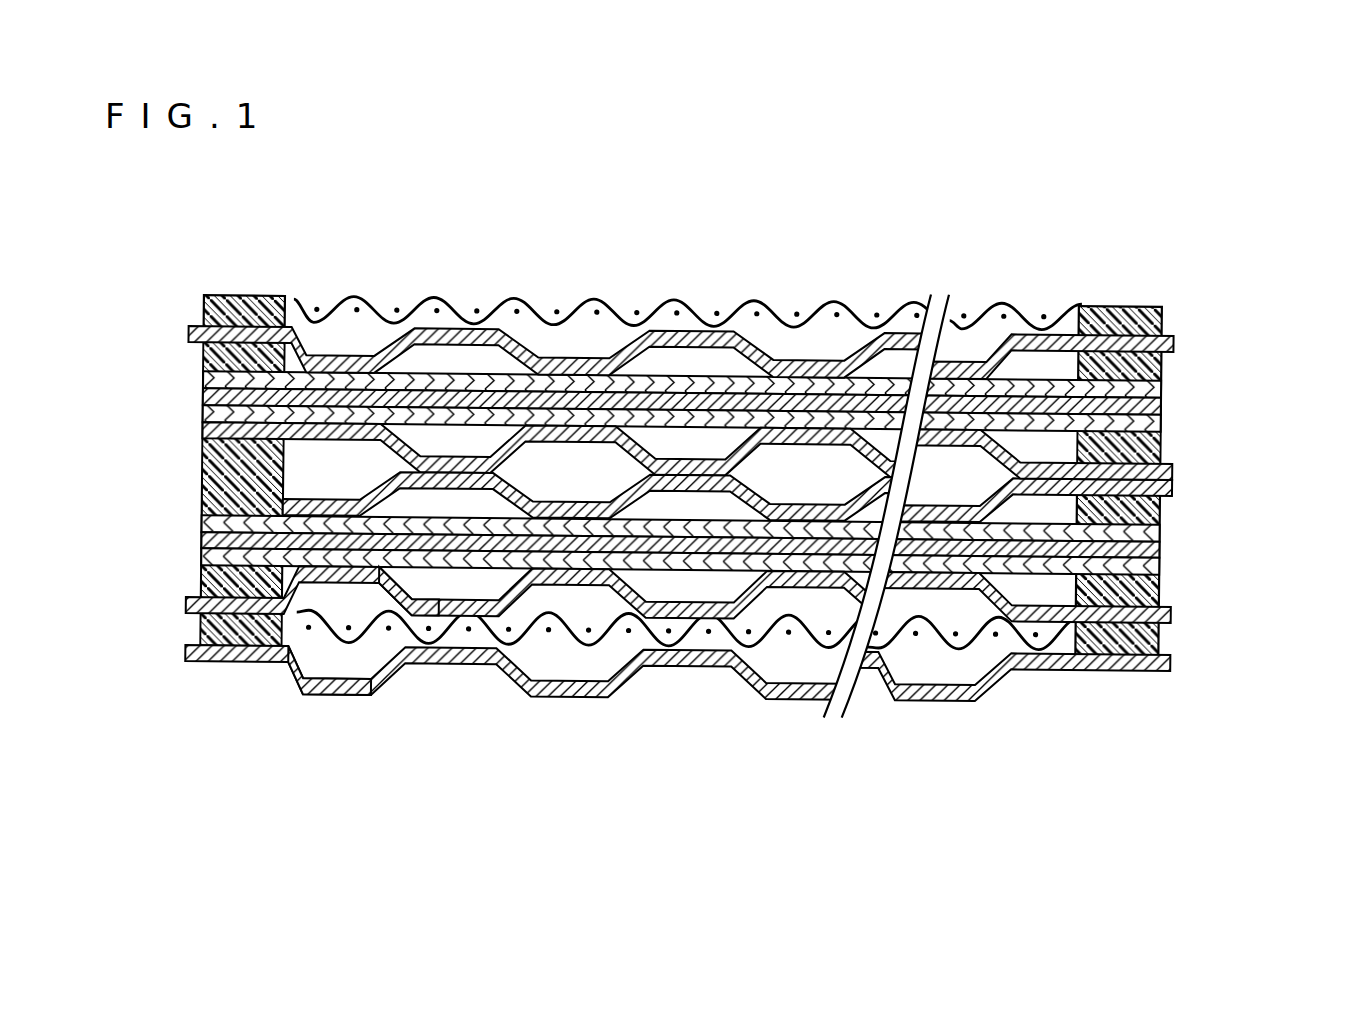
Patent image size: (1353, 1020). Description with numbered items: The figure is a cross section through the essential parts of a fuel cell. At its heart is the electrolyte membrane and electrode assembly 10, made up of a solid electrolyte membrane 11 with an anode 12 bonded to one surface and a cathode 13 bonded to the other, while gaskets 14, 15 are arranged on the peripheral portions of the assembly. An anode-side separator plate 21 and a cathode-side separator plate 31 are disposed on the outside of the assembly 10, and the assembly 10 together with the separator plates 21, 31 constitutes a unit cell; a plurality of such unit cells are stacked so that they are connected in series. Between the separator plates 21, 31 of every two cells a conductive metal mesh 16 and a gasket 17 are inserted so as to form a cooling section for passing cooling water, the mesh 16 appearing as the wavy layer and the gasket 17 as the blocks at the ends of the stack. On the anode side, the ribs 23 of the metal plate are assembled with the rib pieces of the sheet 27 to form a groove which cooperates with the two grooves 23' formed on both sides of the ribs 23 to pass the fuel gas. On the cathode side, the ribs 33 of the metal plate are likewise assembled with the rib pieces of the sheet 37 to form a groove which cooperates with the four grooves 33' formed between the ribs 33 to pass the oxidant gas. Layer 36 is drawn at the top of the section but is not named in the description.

The electrolyte membrane and electrode assembly 10 is at (1175, 376).
The solid electrolyte membrane 11 is at (205, 545).
The anode 12 is at (205, 627).
The cathode 13 is at (298, 688).
The gasket 14 is at (205, 355).
The gasket 15 is at (205, 437).
The conductive metal mesh 16 is at (606, 650).
The gasket 17 is at (247, 300).
The anode-side separator plate 21 is at (852, 336).
The ribs 23 is at (681, 307).
The grooves 23' is at (585, 359).
The sheet 27 is at (1160, 500).
The cathode-side separator plate 31 is at (1046, 381).
The ribs 33 is at (574, 672).
The grooves 33' is at (404, 657).
The adhesive layer 36 is at (568, 300).
The sheet 37 is at (1162, 430).